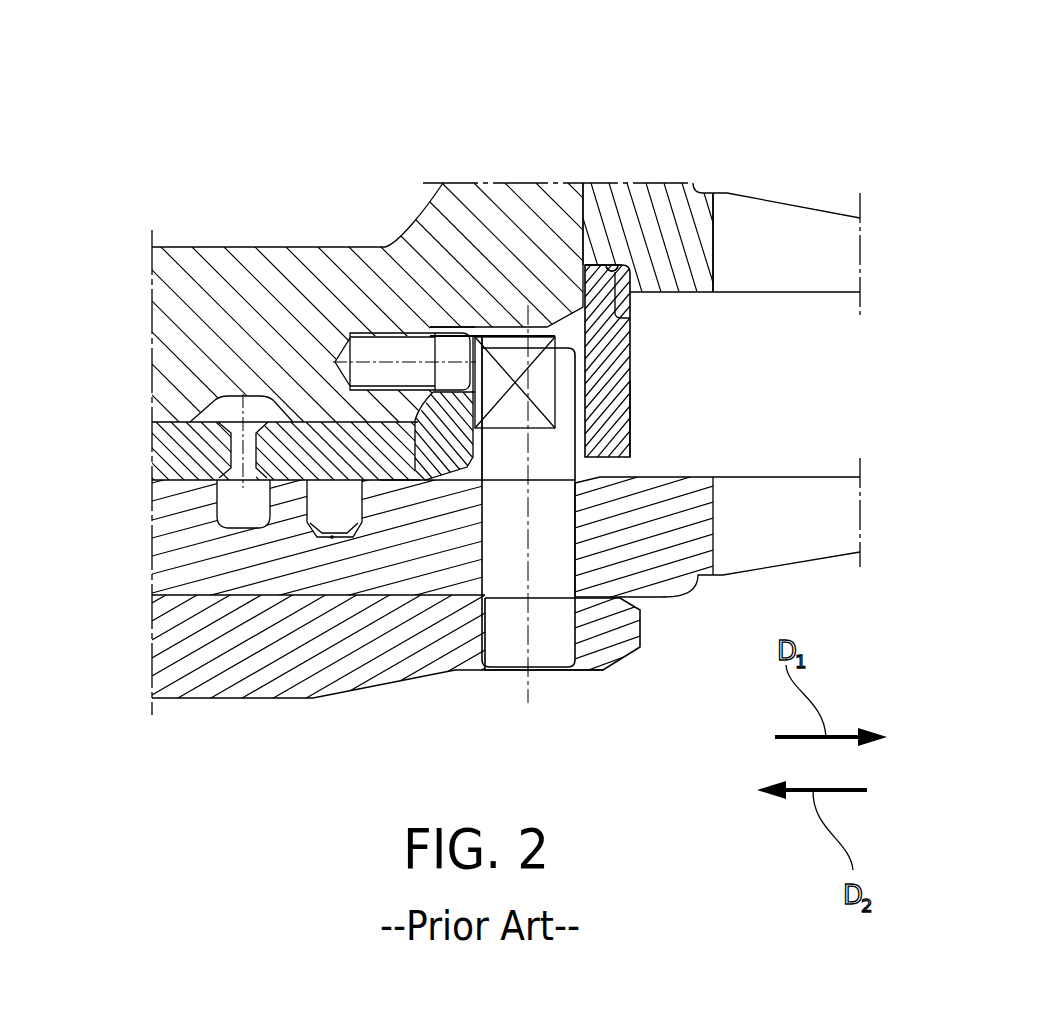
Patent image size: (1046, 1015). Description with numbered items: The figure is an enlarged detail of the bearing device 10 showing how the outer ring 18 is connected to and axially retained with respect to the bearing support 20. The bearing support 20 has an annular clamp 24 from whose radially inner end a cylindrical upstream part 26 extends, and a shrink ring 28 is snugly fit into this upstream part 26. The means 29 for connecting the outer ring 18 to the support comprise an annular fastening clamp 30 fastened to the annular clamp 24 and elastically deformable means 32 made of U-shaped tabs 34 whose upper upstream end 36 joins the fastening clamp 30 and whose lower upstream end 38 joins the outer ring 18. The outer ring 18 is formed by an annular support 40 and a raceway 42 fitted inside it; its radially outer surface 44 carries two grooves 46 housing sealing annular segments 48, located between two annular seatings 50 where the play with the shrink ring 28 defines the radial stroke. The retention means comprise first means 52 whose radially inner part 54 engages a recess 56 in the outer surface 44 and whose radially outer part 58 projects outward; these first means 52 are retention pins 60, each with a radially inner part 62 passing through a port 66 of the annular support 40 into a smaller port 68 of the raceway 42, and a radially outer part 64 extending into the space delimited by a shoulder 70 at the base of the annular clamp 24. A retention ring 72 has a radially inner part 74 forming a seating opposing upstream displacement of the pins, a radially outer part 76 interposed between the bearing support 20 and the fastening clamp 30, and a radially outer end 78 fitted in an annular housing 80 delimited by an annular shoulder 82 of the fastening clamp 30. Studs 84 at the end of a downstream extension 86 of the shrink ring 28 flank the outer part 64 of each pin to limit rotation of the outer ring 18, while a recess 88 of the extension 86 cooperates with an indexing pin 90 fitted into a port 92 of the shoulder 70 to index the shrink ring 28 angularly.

The device 10 is at (403, 367).
The outer ring 18 is at (320, 636).
The bearing support 20 is at (403, 408).
The annular clamp 24 is at (553, 190).
The upstream part 26 is at (222, 257).
The shrink ring 28 is at (180, 422).
The means for connecting 29 is at (707, 180).
The fastening clamp 30 is at (660, 193).
The elastically deformable means 32 is at (765, 199).
The tabs 34 is at (767, 233).
The upper upstream end 36 is at (713, 270).
The lower upstream end 38 is at (710, 497).
The annular support 40 is at (286, 530).
The raceway 42 is at (177, 647).
The radially outer annular surface 44 is at (177, 477).
The grooves 46 is at (332, 539).
The sealing annular segments 48 is at (353, 497).
The annular seatings 50 is at (387, 474).
The first means 52 is at (318, 582).
The radially inner part 54 is at (673, 559).
The recess 56 is at (599, 458).
The radially outer part 58 is at (581, 314).
The retention pins 60 is at (471, 527).
The radially inner part 62 is at (562, 542).
The radially outer part 64 is at (581, 314).
The port 66 is at (601, 517).
The port 68 is at (489, 627).
The shoulder 70 is at (375, 304).
The retention ring 72 is at (670, 328).
The radially inner part 74 is at (625, 407).
The radially outer part 76 is at (620, 270).
The radially outer end 78 is at (597, 262).
The annular housing 80 is at (613, 264).
The annular shoulder 82 is at (618, 320).
The studs 84 is at (515, 338).
The recess 88 is at (452, 327).
The extension 86 is at (418, 415).
The indexing pin 90 is at (455, 352).
The port 92 is at (373, 346).